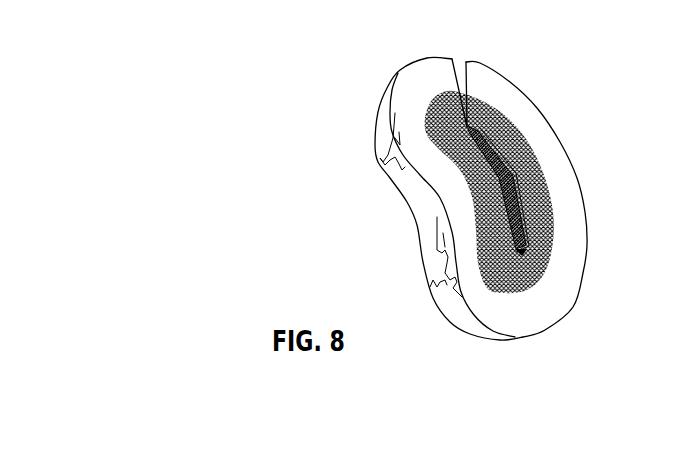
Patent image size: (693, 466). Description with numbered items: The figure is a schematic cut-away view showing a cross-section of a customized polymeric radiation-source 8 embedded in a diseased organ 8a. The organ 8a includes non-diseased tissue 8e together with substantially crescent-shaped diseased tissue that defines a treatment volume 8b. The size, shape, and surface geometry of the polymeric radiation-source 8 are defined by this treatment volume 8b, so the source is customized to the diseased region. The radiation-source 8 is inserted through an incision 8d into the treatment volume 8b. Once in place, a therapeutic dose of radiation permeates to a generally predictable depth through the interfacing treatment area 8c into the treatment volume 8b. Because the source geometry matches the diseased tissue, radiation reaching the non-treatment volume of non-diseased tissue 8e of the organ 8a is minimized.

The polymeric radiation-source 8 is at (495, 176).
The diseased organ 8a is at (324, 98).
The treatment volume 8b is at (552, 223).
The interfacing treatment area 8c is at (497, 147).
The incision 8d is at (461, 73).
The non-diseased tissue 8e is at (426, 100).